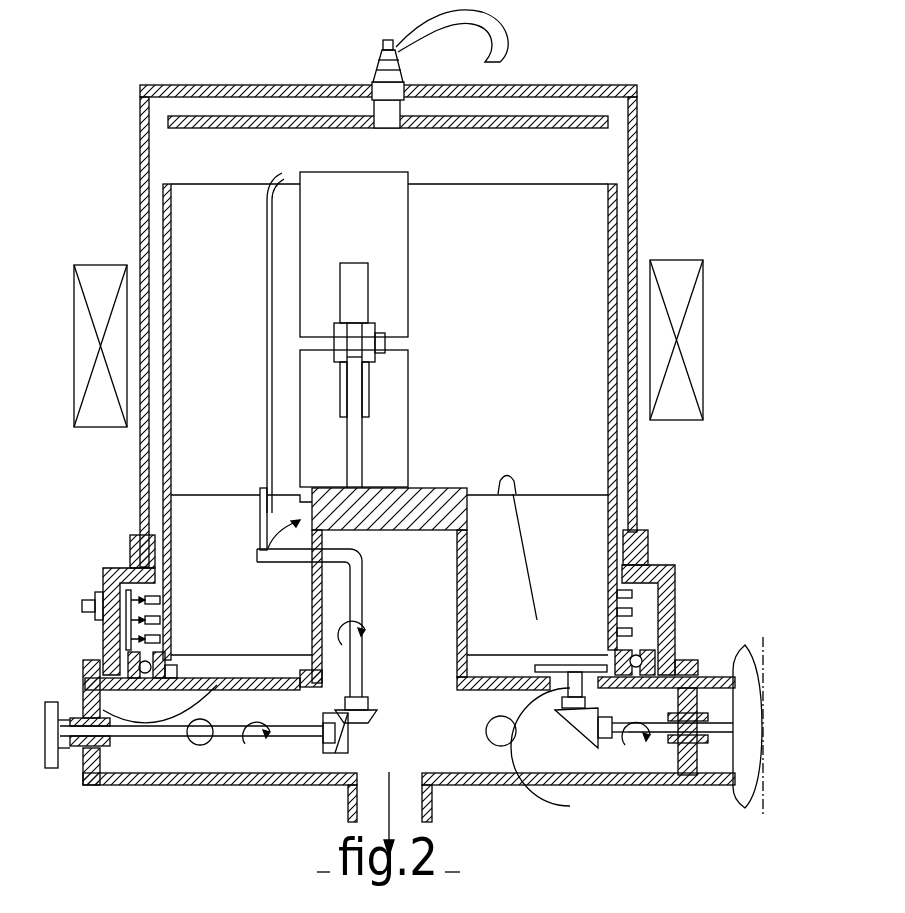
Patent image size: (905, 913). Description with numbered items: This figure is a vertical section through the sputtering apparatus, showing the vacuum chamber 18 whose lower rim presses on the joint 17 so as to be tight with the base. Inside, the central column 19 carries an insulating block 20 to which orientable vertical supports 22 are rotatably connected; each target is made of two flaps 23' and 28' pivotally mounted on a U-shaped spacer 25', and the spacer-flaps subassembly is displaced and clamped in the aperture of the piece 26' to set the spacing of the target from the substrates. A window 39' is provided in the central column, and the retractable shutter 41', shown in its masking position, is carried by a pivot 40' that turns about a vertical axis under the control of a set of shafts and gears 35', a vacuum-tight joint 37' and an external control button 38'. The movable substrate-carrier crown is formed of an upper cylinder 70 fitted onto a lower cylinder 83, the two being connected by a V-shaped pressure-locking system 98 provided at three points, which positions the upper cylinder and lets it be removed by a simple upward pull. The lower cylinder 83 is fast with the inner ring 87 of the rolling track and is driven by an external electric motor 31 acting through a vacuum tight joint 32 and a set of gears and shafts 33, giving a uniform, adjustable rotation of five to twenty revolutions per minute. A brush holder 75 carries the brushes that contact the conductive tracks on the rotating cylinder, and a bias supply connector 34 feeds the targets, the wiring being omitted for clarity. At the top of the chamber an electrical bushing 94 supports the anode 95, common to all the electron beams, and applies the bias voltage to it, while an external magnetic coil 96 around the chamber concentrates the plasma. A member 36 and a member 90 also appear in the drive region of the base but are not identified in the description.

The joint 17 is at (662, 567).
The vacuum chamber 18 is at (142, 260).
The central column 19 is at (460, 563).
The insulating block 20 is at (443, 485).
The orientable vertical support 22 is at (355, 462).
The flap 23' is at (578, 318).
The U-shaped spacer 25' is at (552, 294).
The piece 26' is at (552, 186).
The flap 28' is at (487, 246).
The external electric motor 31 is at (758, 793).
The vacuum tight joint 32 is at (683, 760).
The set of gears and shafts 33 is at (618, 728).
The bias supply connector 34 is at (505, 733).
The set of shafts and gears 35' is at (317, 748).
The opening 36 is at (202, 743).
The vacuum-tight joint 37' is at (191, 797).
The external control button 38' is at (58, 789).
The window 39' is at (166, 509).
The pivot 40' is at (191, 541).
The retractable shutter 41' is at (152, 343).
The upper cylinder 70 is at (615, 457).
The brush holder 75 is at (117, 583).
The lower cylinder 83 is at (618, 517).
The inner ring 87 is at (128, 648).
The base housing 90 is at (97, 675).
The electrical bushing 94 is at (383, 88).
The anode 95 is at (245, 123).
The external magnetic coil 96 is at (105, 282).
The pressure-locking system 98 is at (537, 621).